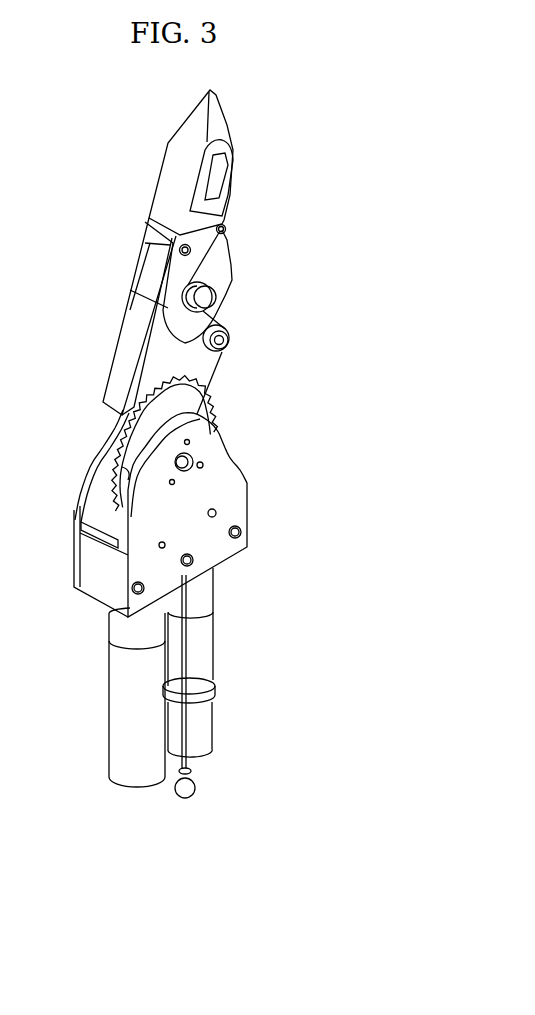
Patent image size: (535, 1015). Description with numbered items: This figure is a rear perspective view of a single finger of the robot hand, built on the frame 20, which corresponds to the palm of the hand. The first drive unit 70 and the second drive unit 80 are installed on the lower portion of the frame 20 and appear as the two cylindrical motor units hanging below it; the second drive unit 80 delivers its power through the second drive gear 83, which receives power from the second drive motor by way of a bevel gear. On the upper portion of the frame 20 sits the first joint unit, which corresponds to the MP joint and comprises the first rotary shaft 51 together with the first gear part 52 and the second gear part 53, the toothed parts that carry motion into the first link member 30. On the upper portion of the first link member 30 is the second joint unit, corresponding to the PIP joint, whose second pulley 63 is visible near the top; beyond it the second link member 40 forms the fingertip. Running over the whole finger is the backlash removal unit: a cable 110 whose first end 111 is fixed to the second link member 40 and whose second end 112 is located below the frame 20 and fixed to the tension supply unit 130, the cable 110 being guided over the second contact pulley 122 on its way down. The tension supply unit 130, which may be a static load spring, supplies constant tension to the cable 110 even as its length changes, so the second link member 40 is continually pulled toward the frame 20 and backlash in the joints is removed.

The frame 20 is at (236, 506).
The first link member 30 is at (125, 357).
The second link member 40 is at (158, 207).
The first rotary shaft 51 is at (205, 464).
The first gear part 52 is at (104, 456).
The second gear part 53 is at (122, 480).
The second pulley 63 is at (212, 294).
The first drive unit 70 is at (104, 704).
The second drive unit 80 is at (222, 645).
The second drive gear 83 is at (108, 524).
The cable 110 is at (212, 388).
The first end of the cable 111 is at (224, 229).
The second end of the cable 112 is at (193, 766).
The second contact pulley 122 is at (228, 340).
The tension supply unit 130 is at (187, 792).